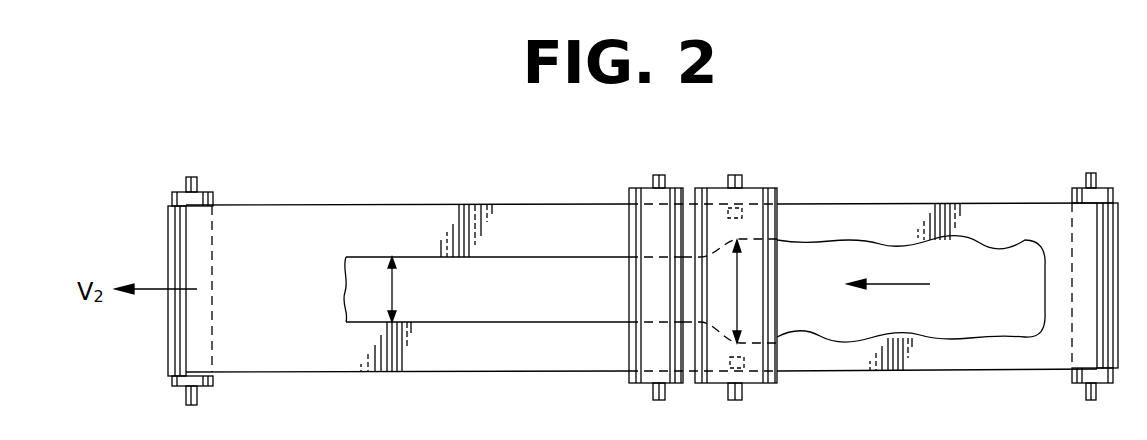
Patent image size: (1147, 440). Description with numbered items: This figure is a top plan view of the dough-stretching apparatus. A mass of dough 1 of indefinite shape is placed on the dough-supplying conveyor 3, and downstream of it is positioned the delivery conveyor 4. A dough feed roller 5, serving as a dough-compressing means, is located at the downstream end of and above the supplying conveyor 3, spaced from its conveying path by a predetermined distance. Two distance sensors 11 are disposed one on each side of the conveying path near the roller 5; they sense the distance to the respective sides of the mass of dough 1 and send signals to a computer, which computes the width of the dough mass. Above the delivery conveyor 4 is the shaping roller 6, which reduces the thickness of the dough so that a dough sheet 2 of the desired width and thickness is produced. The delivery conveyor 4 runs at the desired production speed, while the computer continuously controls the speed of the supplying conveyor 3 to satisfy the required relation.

The mass of dough 1 is at (897, 250).
The dough sheet 2 is at (424, 268).
The dough-supplying conveyor 3 is at (1010, 218).
The delivery conveyor 4 is at (267, 206).
The dough feed roller 5 is at (705, 188).
The shaping roller 6 is at (647, 188).
The distance sensors 11 is at (742, 213).